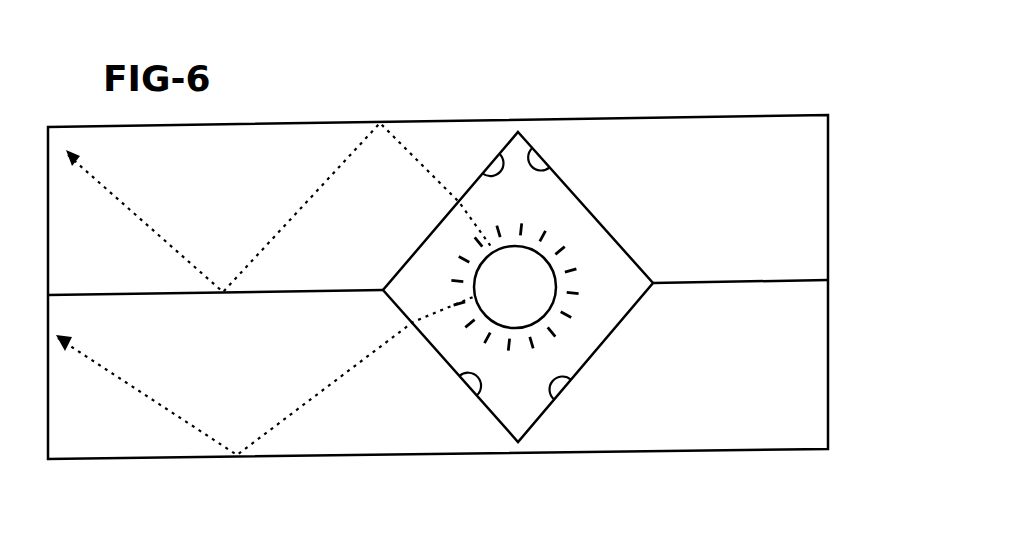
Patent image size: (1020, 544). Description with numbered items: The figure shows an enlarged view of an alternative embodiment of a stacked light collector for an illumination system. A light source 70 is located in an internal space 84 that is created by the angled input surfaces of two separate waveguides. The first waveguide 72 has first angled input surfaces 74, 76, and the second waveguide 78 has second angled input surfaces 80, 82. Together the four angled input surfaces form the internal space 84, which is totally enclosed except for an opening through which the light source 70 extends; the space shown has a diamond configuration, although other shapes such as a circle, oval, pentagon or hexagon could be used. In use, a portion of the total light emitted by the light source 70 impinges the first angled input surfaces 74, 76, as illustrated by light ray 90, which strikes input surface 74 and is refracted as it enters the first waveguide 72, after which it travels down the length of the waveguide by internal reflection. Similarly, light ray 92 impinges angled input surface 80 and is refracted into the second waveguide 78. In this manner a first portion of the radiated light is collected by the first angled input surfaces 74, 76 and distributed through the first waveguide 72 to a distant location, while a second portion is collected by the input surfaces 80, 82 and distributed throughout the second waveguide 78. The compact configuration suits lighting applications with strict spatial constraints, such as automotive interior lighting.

The light source 70 is at (528, 302).
The first waveguide 72 is at (792, 424).
The first angled input surface 74 is at (478, 396).
The first angled input surface 76 is at (556, 398).
The second waveguide 78 is at (769, 214).
The second angled input surface 80 is at (500, 172).
The second angled input surface 82 is at (527, 160).
The internal space 84 is at (625, 305).
The light ray 90 is at (347, 370).
The light ray 92 is at (290, 218).